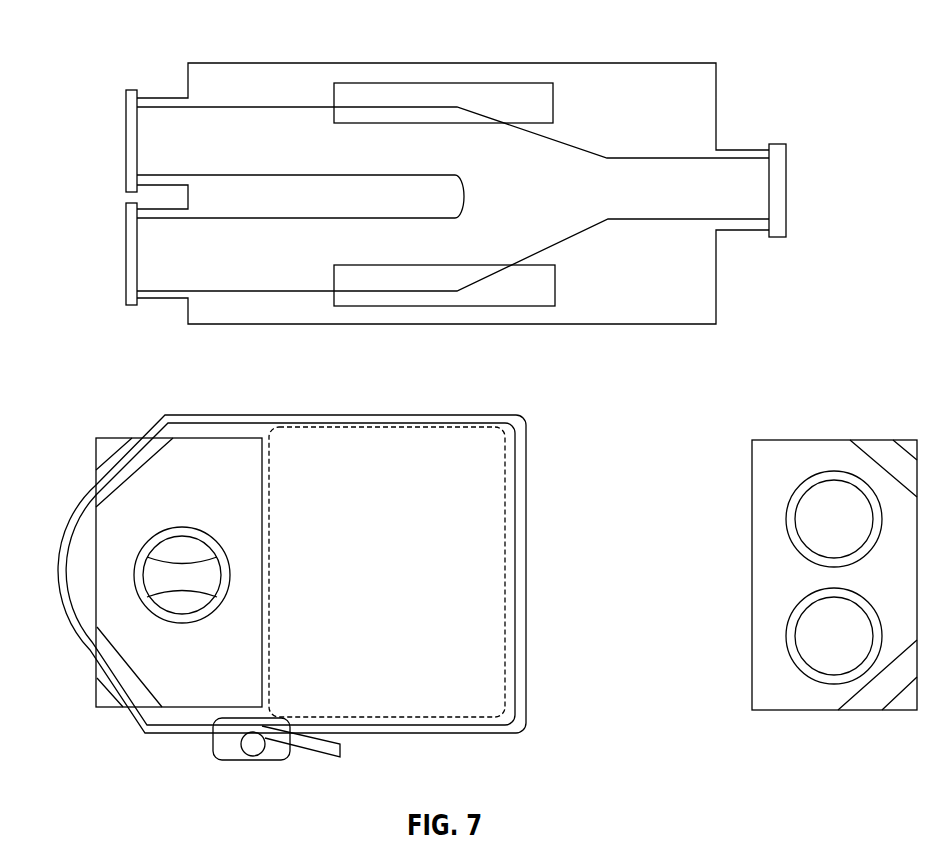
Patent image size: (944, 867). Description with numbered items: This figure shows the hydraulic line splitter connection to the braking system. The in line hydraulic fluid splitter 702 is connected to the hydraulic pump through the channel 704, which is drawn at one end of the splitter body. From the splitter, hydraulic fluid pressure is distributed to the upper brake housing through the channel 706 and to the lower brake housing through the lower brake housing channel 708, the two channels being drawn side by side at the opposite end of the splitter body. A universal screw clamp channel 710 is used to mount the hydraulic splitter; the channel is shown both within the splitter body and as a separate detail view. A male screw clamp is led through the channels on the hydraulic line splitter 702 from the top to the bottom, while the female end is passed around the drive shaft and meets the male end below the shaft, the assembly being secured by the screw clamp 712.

The in line hydraulic fluid splitter 702 is at (145, 59).
The channel 704 is at (787, 190).
The channel 706 is at (126, 141).
The lower brake housing channel 708 is at (126, 253).
The universal screw clamp channel 710 is at (523, 292).
The screw clamp 712 is at (228, 750).